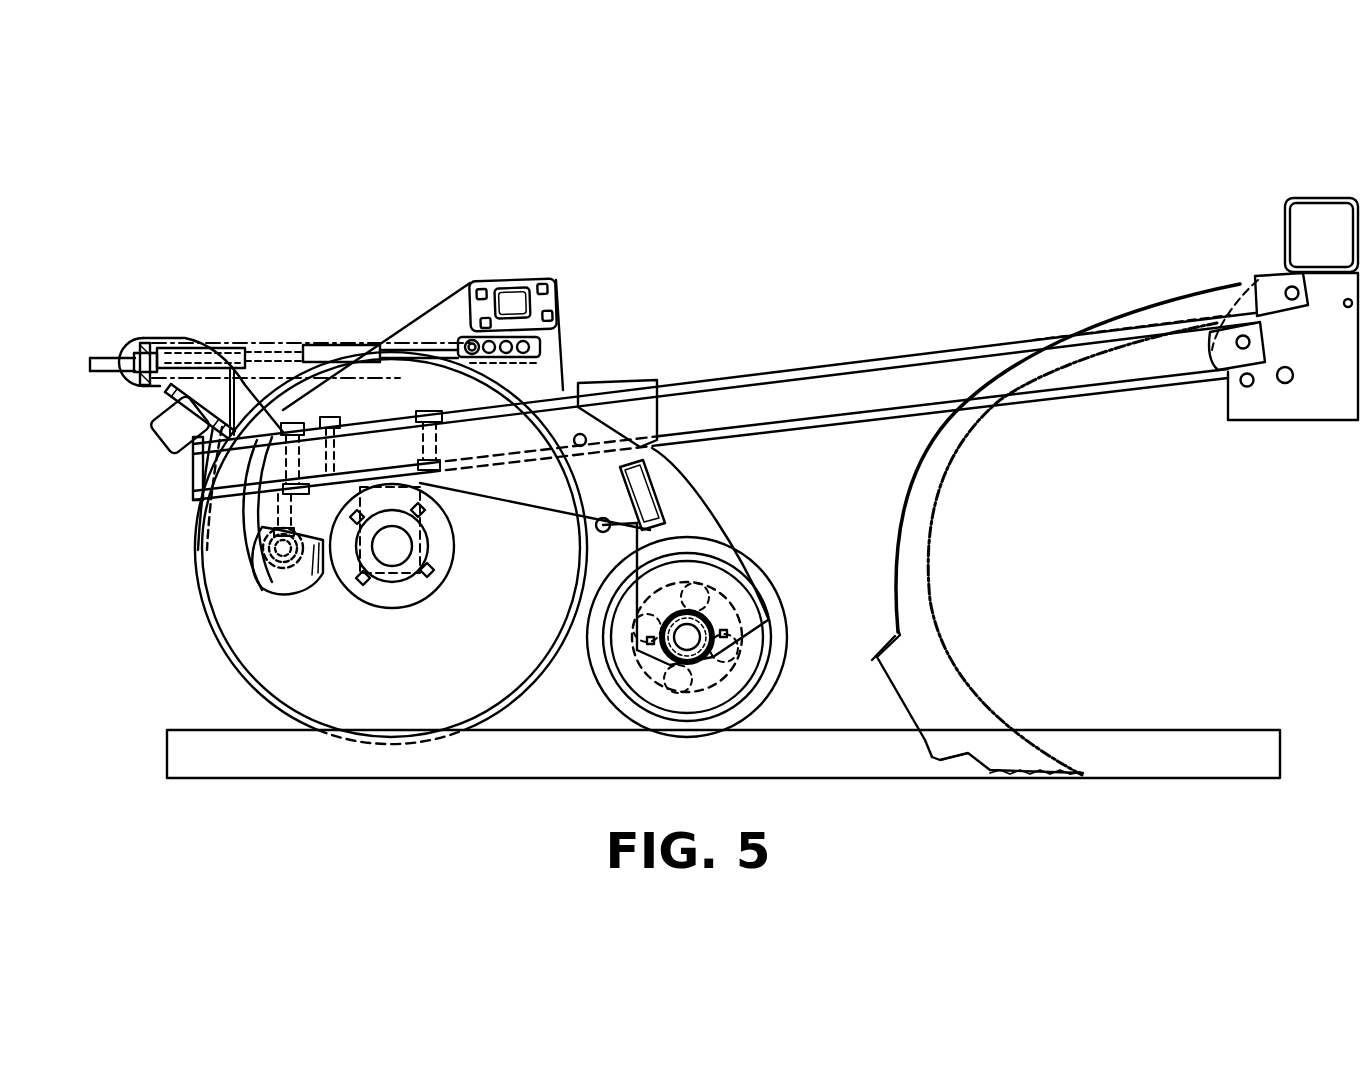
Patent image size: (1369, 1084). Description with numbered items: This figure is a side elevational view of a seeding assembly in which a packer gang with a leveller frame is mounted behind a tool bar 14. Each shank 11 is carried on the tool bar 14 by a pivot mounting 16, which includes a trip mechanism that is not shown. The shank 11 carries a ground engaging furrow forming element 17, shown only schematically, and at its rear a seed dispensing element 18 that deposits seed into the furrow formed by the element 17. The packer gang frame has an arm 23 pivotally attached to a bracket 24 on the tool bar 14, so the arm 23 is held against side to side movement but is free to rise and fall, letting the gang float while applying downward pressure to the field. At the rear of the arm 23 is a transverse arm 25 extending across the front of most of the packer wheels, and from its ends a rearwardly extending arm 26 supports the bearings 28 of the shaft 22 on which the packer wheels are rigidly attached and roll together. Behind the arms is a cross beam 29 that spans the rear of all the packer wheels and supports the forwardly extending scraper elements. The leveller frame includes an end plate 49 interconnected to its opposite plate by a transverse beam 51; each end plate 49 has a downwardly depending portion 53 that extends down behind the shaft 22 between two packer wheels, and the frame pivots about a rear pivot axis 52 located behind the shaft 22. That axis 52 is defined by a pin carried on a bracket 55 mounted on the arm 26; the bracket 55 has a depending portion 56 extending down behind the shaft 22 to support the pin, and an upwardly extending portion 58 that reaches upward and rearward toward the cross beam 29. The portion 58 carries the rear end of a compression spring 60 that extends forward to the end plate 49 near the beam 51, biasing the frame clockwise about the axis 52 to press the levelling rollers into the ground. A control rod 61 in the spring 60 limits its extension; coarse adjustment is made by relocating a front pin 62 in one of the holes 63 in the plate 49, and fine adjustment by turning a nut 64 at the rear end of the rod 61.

The shank 11 is at (940, 542).
The tool bar 14 is at (1288, 200).
The pivot mounting 16 is at (1275, 300).
The ground engaging furrow forming element 17 is at (1020, 762).
The seed dispensing element 18 is at (905, 675).
The shaft 22 is at (392, 550).
The arm 23 is at (862, 357).
The bracket 24 is at (1272, 395).
The transverse arm 25 is at (628, 400).
The rearwardly extending arm 26 is at (492, 432).
The bearing 28 is at (410, 580).
The cross beam 29 is at (157, 432).
The end plate 49 is at (438, 330).
The transverse beam 51 is at (518, 292).
The rear pivot axis 52 is at (283, 550).
The downwardly depending portion 53 is at (245, 517).
The bracket 55 is at (230, 503).
The depending portion 56 is at (233, 530).
The upwardly extending portion 58 is at (178, 338).
The compression spring 60 is at (318, 338).
The control rod 61 is at (262, 350).
The front pin 62 is at (468, 352).
The holes 63 is at (525, 347).
The nut 64 is at (143, 335).